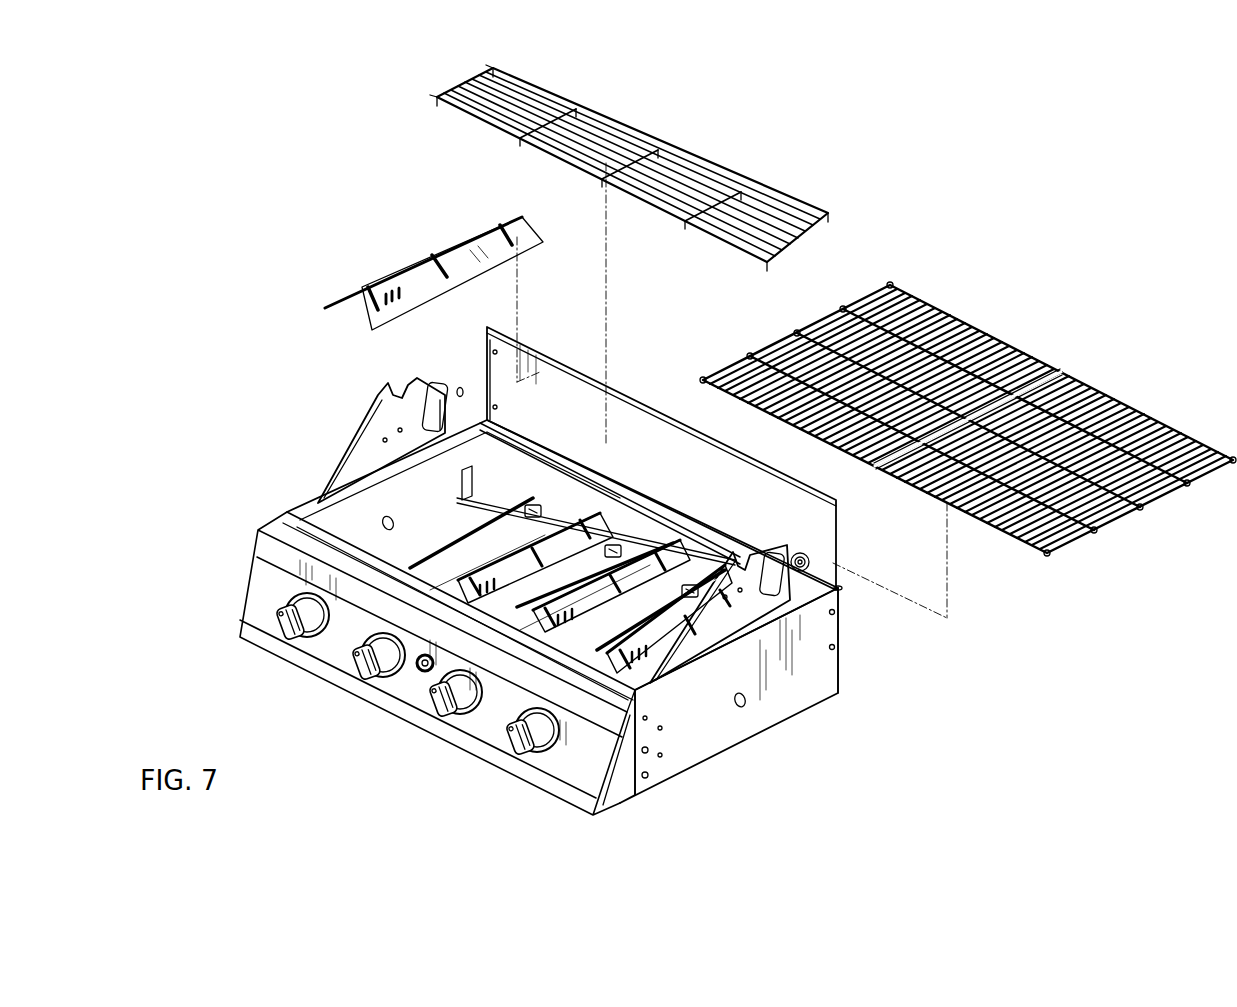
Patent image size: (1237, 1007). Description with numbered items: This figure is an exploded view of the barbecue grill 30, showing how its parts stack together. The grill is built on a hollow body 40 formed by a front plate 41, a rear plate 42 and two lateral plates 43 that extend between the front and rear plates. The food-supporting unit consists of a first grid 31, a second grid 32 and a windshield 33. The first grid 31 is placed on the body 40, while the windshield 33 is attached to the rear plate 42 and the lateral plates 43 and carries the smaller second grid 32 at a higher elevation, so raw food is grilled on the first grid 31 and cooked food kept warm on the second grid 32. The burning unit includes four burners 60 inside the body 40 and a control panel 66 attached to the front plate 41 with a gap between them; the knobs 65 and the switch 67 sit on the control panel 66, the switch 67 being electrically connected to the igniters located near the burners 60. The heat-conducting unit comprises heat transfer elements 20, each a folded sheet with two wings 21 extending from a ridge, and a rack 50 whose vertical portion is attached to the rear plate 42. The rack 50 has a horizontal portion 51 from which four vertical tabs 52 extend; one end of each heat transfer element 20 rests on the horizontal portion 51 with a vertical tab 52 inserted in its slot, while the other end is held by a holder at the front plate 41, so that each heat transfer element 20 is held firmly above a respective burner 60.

The heat transfer element 20 is at (428, 245).
The wings 21 is at (425, 283).
The barbecue grill 30 is at (968, 497).
The first grid 31 is at (968, 443).
The second grid 32 is at (693, 157).
The windshield 33 is at (842, 586).
The body 40 is at (594, 549).
The front plate 41 is at (308, 532).
The rear plate 42 is at (510, 463).
The lateral plates 43 is at (702, 737).
The rack 50 is at (588, 460).
The horizontal portion 51 is at (552, 450).
The vertical tabs 52 is at (622, 477).
The burners 60 is at (443, 560).
The knobs 65 is at (365, 653).
The control panel 66 is at (483, 718).
The switch 67 is at (415, 668).